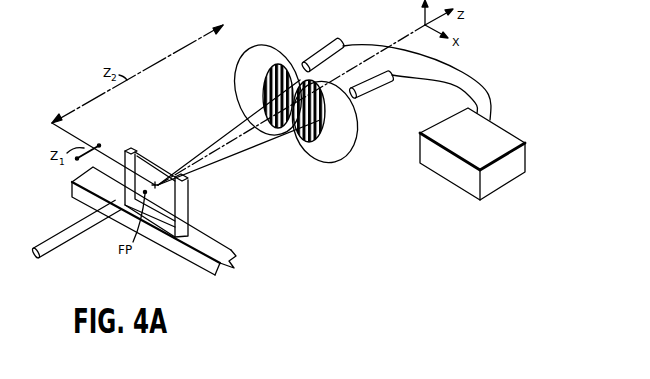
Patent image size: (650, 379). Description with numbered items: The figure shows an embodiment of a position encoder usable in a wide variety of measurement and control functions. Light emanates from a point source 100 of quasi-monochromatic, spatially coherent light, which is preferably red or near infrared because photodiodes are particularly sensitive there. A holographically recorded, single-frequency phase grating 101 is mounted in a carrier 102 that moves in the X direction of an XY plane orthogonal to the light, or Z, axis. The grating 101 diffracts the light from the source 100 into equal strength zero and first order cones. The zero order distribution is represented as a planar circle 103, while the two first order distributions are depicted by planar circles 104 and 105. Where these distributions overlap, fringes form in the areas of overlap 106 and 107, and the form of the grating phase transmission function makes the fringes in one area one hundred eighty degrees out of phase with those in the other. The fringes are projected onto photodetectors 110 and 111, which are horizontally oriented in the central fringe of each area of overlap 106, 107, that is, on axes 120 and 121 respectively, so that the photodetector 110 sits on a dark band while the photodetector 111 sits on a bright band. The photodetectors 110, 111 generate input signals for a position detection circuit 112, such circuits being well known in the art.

The point source 100 is at (97, 227).
The phase grating 101 is at (145, 166).
The carrier 102 is at (190, 208).
The planar circle 103 is at (294, 106).
The planar circle 104 is at (253, 43).
The planar circle 105 is at (348, 160).
The area of overlap 106 is at (278, 126).
The area of overlap 107 is at (302, 142).
The photodetector 110 is at (313, 53).
The photodetector 111 is at (378, 89).
The position detection circuit 112 is at (493, 133).
The axis 120 is at (216, 139).
The axis 121 is at (230, 154).